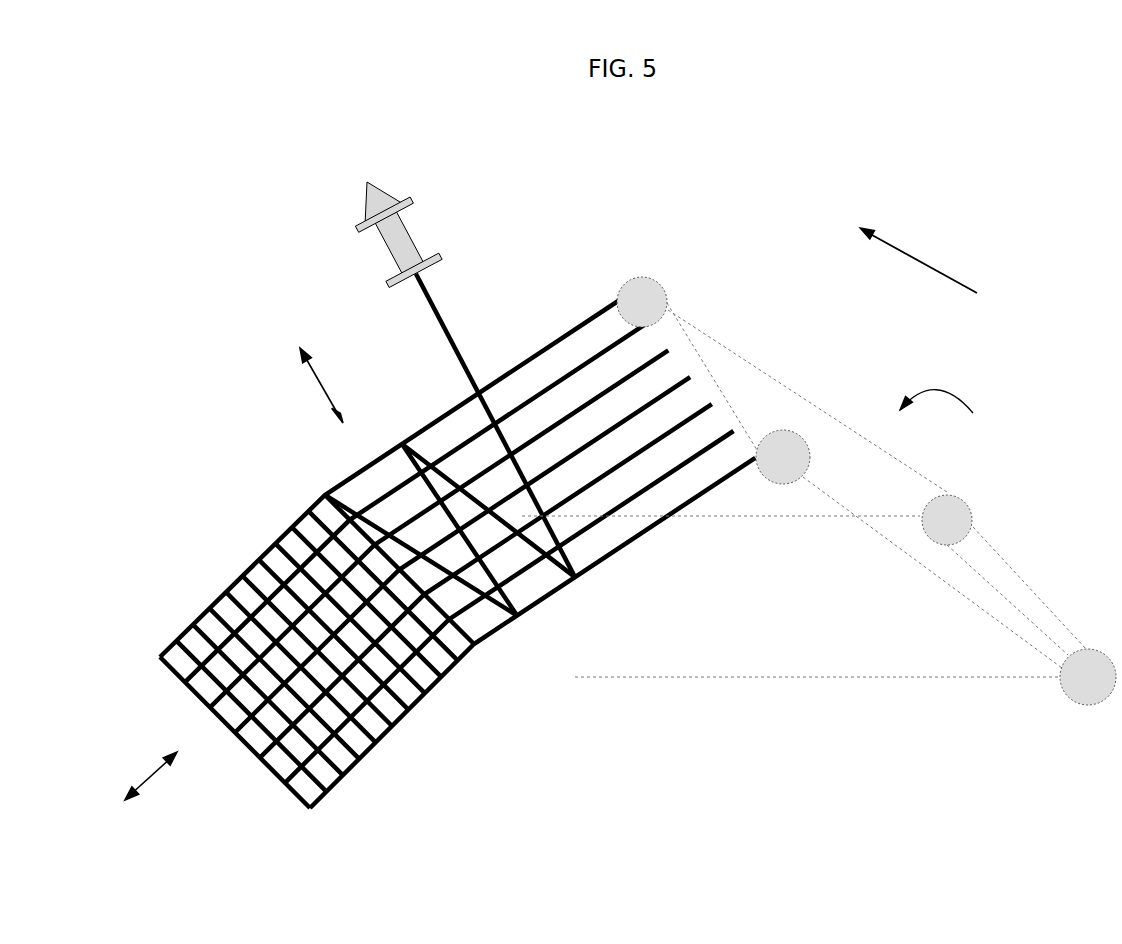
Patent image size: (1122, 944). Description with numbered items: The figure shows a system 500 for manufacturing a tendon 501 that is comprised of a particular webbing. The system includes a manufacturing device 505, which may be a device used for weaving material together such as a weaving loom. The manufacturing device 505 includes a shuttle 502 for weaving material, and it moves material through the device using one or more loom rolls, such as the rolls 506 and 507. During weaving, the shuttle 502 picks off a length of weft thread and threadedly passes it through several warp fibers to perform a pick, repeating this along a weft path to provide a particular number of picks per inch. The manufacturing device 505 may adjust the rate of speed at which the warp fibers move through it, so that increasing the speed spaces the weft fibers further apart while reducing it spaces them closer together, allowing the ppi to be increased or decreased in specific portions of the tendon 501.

The system 500 is at (1016, 74).
The tendon 501 is at (205, 613).
The shuttle 502 is at (412, 238).
The manufacturing device 505 is at (956, 467).
The loom roll 506 is at (648, 278).
The loom roll 507 is at (1080, 705).